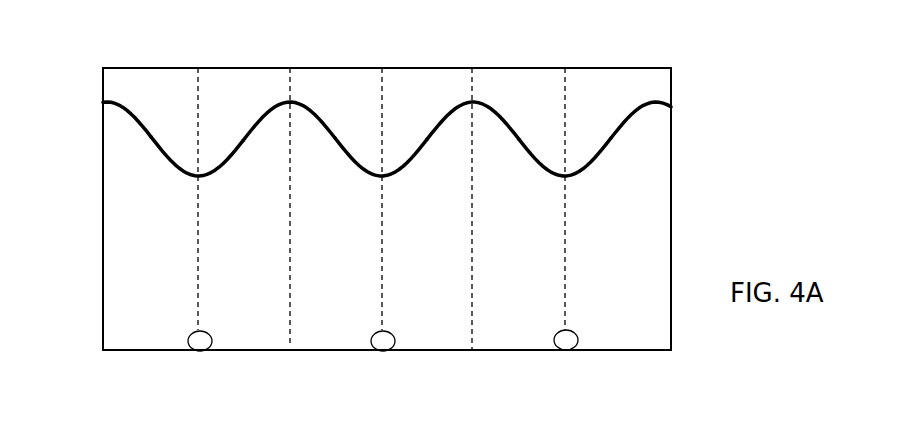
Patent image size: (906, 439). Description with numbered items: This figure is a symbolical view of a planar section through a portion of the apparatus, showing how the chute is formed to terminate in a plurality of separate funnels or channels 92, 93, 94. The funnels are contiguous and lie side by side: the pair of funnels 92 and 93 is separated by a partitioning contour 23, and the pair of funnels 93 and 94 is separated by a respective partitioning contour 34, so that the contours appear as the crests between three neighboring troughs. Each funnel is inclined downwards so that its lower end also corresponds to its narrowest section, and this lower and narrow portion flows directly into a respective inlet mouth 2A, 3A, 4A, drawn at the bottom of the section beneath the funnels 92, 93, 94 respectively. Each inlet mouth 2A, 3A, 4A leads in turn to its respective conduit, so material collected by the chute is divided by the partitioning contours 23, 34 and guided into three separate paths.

The partitioning contour 23 is at (292, 93).
The partitioning contour 34 is at (474, 93).
The funnel 92 is at (196, 182).
The funnel 93 is at (380, 182).
The funnel 94 is at (566, 182).
The inlet mouth 2A is at (198, 356).
The inlet mouth 3A is at (382, 356).
The inlet mouth 4A is at (566, 356).